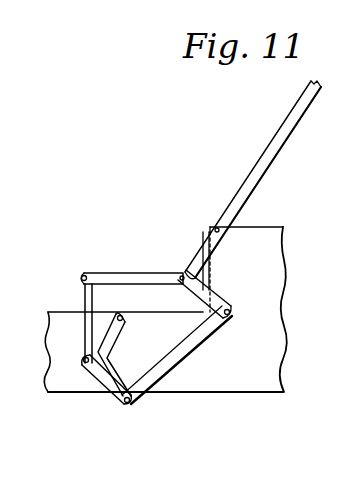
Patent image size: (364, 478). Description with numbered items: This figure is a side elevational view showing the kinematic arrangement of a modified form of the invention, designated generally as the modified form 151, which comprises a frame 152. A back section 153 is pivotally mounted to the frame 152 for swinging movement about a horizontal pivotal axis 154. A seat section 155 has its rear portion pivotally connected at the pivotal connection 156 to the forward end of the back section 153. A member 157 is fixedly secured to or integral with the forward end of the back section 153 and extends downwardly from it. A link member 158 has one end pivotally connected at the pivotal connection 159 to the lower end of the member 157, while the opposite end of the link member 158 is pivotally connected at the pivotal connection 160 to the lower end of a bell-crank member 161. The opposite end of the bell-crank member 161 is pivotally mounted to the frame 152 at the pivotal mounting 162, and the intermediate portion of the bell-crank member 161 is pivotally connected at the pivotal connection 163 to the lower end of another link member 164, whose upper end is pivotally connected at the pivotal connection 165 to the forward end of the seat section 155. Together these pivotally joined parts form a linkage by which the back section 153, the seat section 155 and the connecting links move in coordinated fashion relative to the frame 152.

The modified form of the invention 151 is at (148, 184).
The frame 152 is at (268, 236).
The back section 153 is at (258, 160).
The horizontal pivotal axis 154 is at (215, 230).
The seat section 155 is at (106, 273).
The pivotal connection 156 is at (183, 268).
The member 157 is at (222, 298).
The link member 158 is at (158, 378).
The pivotal connection 159 is at (233, 313).
The pivotal connection 160 is at (127, 403).
The bell-crank member 161 is at (100, 380).
The pivotal mounting 162 is at (124, 316).
The pivotal connection 163 is at (82, 362).
The link member 164 is at (84, 296).
The pivotal connection 165 is at (80, 278).